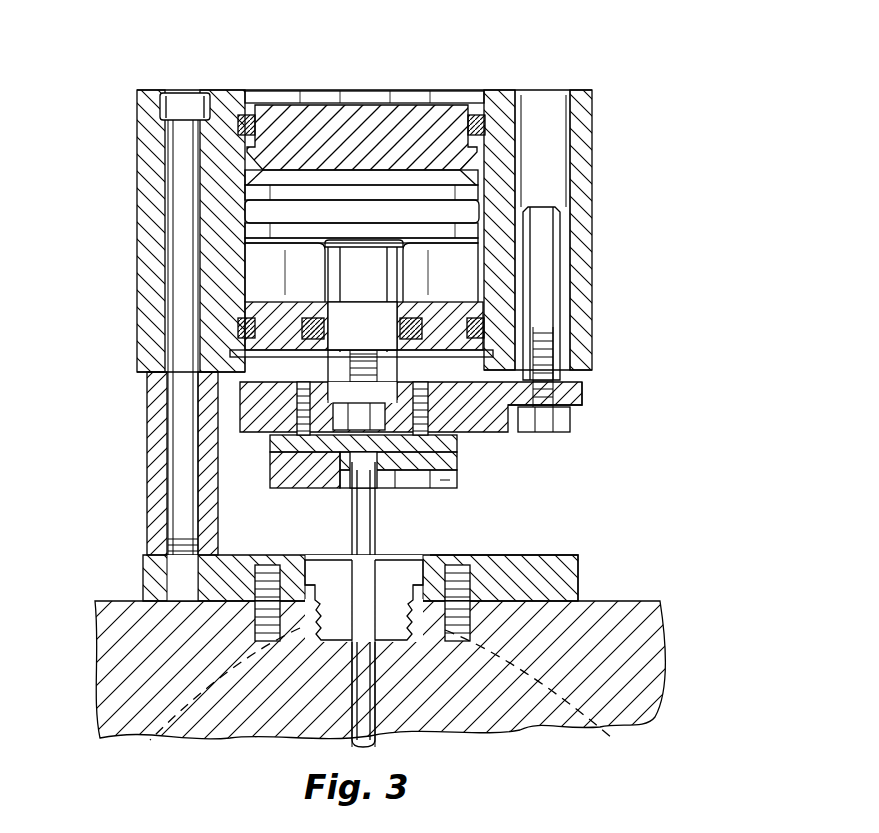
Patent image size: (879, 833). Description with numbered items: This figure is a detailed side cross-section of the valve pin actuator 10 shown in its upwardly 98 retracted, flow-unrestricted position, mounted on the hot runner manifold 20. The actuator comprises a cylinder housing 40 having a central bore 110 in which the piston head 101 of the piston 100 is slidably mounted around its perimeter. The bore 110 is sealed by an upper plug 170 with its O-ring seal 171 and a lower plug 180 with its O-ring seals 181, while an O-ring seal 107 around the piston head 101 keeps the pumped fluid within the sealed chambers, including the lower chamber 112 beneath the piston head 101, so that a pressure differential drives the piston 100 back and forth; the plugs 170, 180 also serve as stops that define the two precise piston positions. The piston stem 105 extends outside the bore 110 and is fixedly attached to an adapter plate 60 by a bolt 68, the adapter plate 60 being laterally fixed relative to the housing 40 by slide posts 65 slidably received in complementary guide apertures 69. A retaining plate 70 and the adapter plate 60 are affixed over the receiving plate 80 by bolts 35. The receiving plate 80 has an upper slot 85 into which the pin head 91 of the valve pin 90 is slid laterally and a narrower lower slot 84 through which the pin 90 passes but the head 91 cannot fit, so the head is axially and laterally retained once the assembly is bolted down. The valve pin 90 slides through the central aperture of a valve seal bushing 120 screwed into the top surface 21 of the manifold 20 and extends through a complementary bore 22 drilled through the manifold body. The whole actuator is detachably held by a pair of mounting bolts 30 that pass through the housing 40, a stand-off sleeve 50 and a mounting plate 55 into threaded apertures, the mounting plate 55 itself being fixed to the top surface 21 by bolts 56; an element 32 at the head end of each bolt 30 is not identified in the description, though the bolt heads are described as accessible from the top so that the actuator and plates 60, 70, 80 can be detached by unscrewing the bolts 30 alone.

The valve pin actuator 10 is at (654, 42).
The hot runner manifold 20 is at (680, 634).
The top surface of the manifold 21 is at (150, 590).
The complementary bore 22 is at (372, 715).
The mounting bolts 30 is at (190, 203).
The bolt head 32 is at (175, 100).
The bolts 35 is at (295, 450).
The cylinder housing 40 is at (160, 153).
The stand-off sleeve 50 is at (150, 463).
The mounting plate 55 is at (578, 558).
The bolts 56 is at (157, 740).
The adapter plate 60 is at (585, 395).
The slide posts 65 is at (537, 208).
The bolt 68 is at (505, 443).
The guide apertures 69 is at (548, 112).
The retaining plate 70 is at (300, 440).
The receiving plate 80 is at (300, 470).
The lower slot 84 is at (440, 468).
The upper slot 85 is at (445, 455).
The valve pin 90 is at (350, 519).
The pin head 91 is at (340, 487).
The upward direction 98 is at (410, 515).
The piston 100 is at (349, 158).
The piston head 101 is at (388, 173).
The piston stem 105 is at (350, 265).
The O-ring seal 107 is at (478, 205).
The central bore 110 is at (468, 292).
The lower sealed chamber 112 is at (280, 288).
The valve seal bushing 120 is at (330, 640).
The upper plug 170 is at (297, 118).
The O-ring seal 171 is at (477, 122).
The lower plug 180 is at (330, 357).
The O-ring seals 181 is at (315, 330).